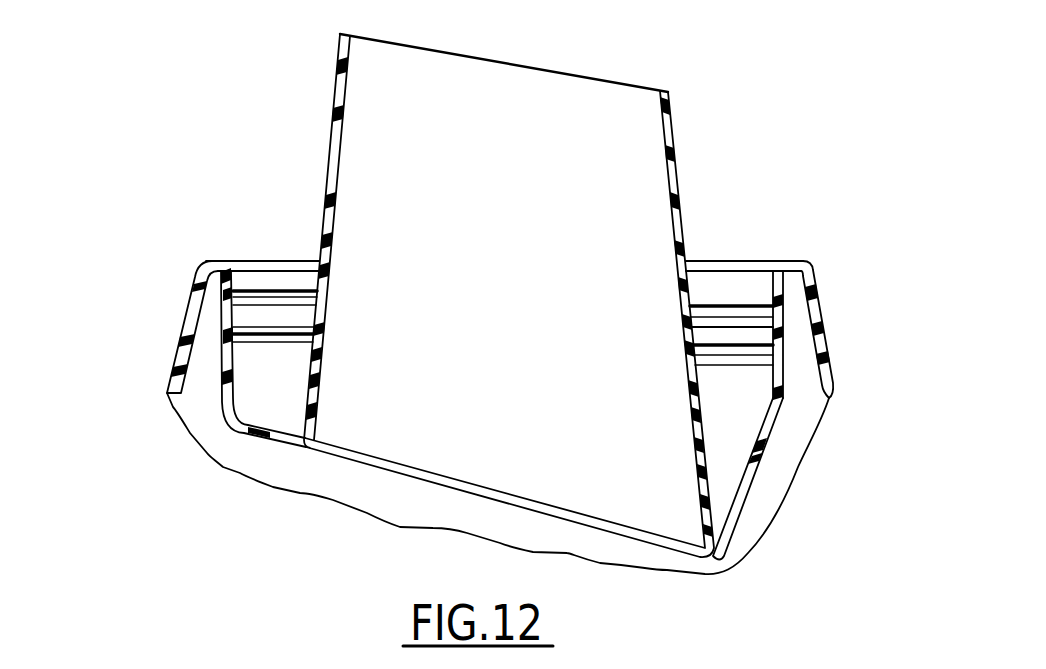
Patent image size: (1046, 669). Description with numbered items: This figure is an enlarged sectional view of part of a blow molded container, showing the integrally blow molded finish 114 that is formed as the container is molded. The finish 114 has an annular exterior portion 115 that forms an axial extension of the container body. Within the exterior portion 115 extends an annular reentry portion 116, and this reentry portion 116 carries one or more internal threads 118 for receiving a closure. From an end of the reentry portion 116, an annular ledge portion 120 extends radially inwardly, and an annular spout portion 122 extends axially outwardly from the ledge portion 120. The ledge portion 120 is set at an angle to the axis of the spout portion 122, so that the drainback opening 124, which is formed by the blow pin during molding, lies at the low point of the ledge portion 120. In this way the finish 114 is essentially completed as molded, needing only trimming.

The finish 114 is at (184, 289).
The annular exterior portion 115 is at (820, 308).
The annular reentry portion 116 is at (777, 354).
The internal threads 118 is at (733, 308).
The annular ledge portion 120 is at (265, 438).
The annular spout portion 122 is at (673, 138).
The drainback opening 124 is at (737, 517).